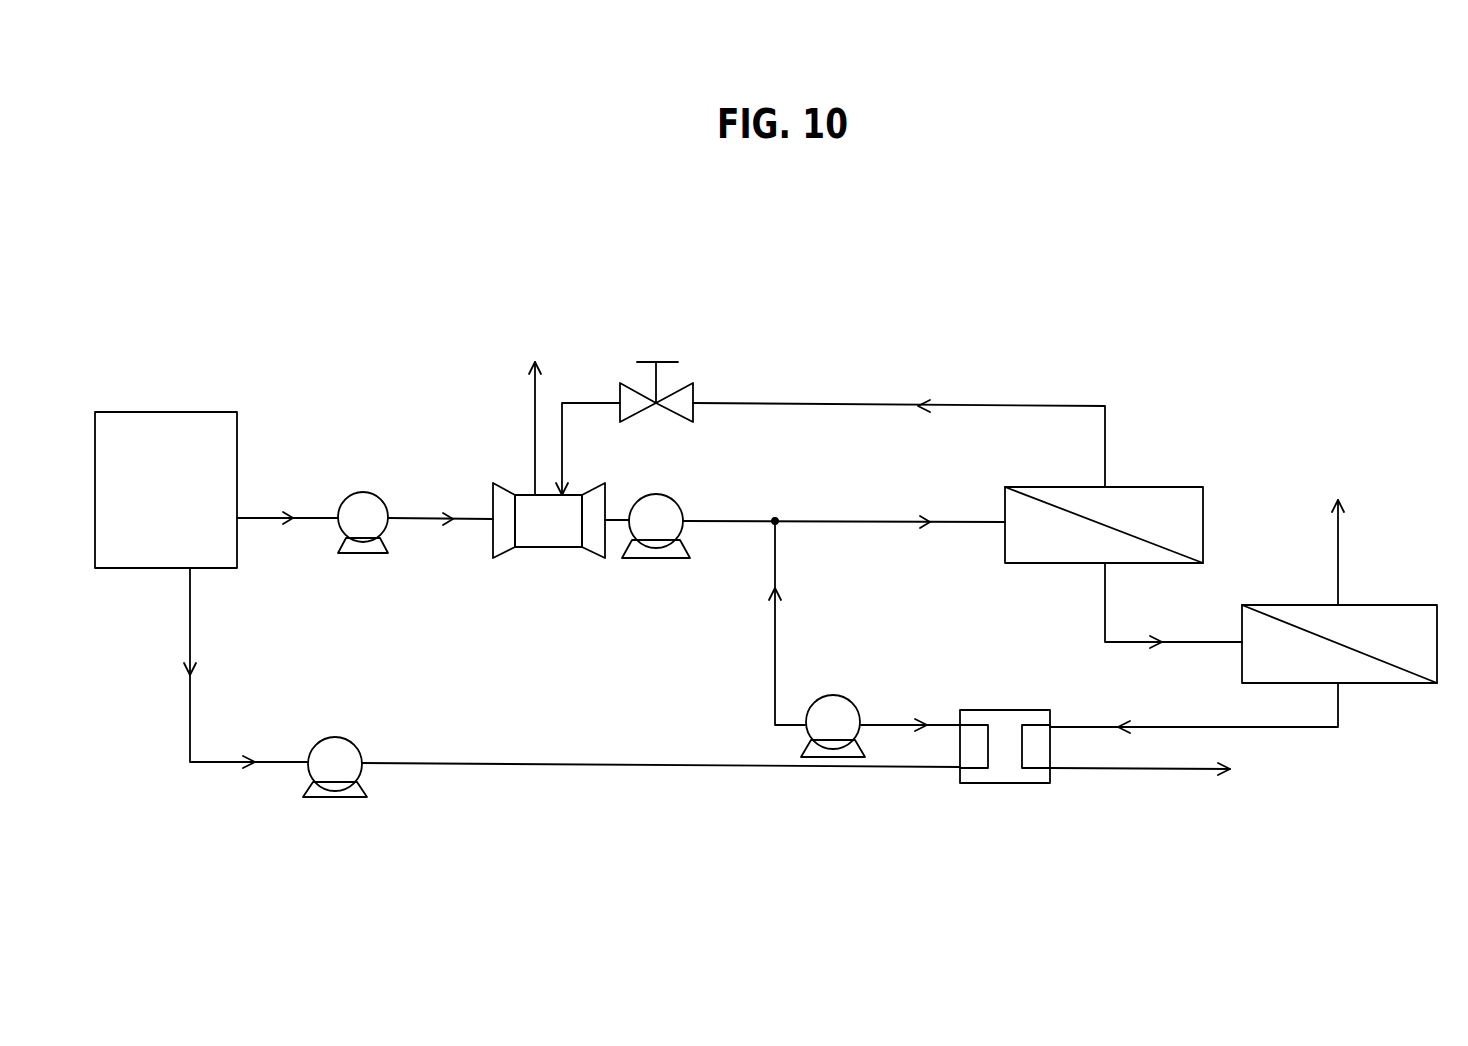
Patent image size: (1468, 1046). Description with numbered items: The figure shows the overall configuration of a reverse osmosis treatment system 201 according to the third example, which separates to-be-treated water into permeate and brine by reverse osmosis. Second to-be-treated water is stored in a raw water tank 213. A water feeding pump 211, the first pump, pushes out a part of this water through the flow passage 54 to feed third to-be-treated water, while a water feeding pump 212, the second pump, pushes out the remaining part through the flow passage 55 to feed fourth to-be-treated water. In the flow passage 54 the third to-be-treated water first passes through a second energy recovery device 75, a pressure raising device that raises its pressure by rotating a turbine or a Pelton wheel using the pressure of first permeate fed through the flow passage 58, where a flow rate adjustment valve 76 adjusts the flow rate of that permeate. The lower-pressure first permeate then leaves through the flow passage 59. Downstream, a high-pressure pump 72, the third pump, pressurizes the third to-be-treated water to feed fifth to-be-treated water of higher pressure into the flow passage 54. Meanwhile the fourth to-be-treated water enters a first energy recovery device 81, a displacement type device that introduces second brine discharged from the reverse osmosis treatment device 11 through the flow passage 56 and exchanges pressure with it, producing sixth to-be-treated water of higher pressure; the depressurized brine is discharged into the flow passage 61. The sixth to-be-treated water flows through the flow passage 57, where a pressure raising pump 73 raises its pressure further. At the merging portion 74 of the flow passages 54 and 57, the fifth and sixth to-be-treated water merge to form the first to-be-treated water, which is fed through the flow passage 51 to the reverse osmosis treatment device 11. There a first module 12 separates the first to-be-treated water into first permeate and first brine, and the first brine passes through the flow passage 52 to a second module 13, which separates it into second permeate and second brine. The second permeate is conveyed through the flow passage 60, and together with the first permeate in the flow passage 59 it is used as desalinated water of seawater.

The reverse osmosis treatment system 201 is at (380, 303).
The reverse osmosis treatment device 11 is at (1395, 525).
The first module 12 is at (1155, 487).
The second module 13 is at (1390, 605).
The flow passage 51 is at (900, 524).
The flow passage 52 is at (1103, 612).
The flow passage 54 is at (310, 521).
The flow passage 55 is at (278, 766).
The flow passage 56 is at (1082, 725).
The flow passage 57 is at (773, 643).
The flow passage 58 is at (828, 404).
The flow passage 59 is at (530, 402).
The flow passage 60 is at (1333, 551).
The flow passage 61 is at (1082, 771).
The high-pressure pump 72 is at (656, 493).
The pressure raising pump 73 is at (833, 695).
The merging portion 74 is at (786, 532).
The second energy recovery device 75 is at (550, 548).
The flow rate adjustment valve 76 is at (660, 385).
The first energy recovery device 81 is at (1003, 710).
The water feeding pump 211 is at (362, 555).
The water feeding pump 212 is at (345, 740).
The raw water tank 213 is at (175, 412).